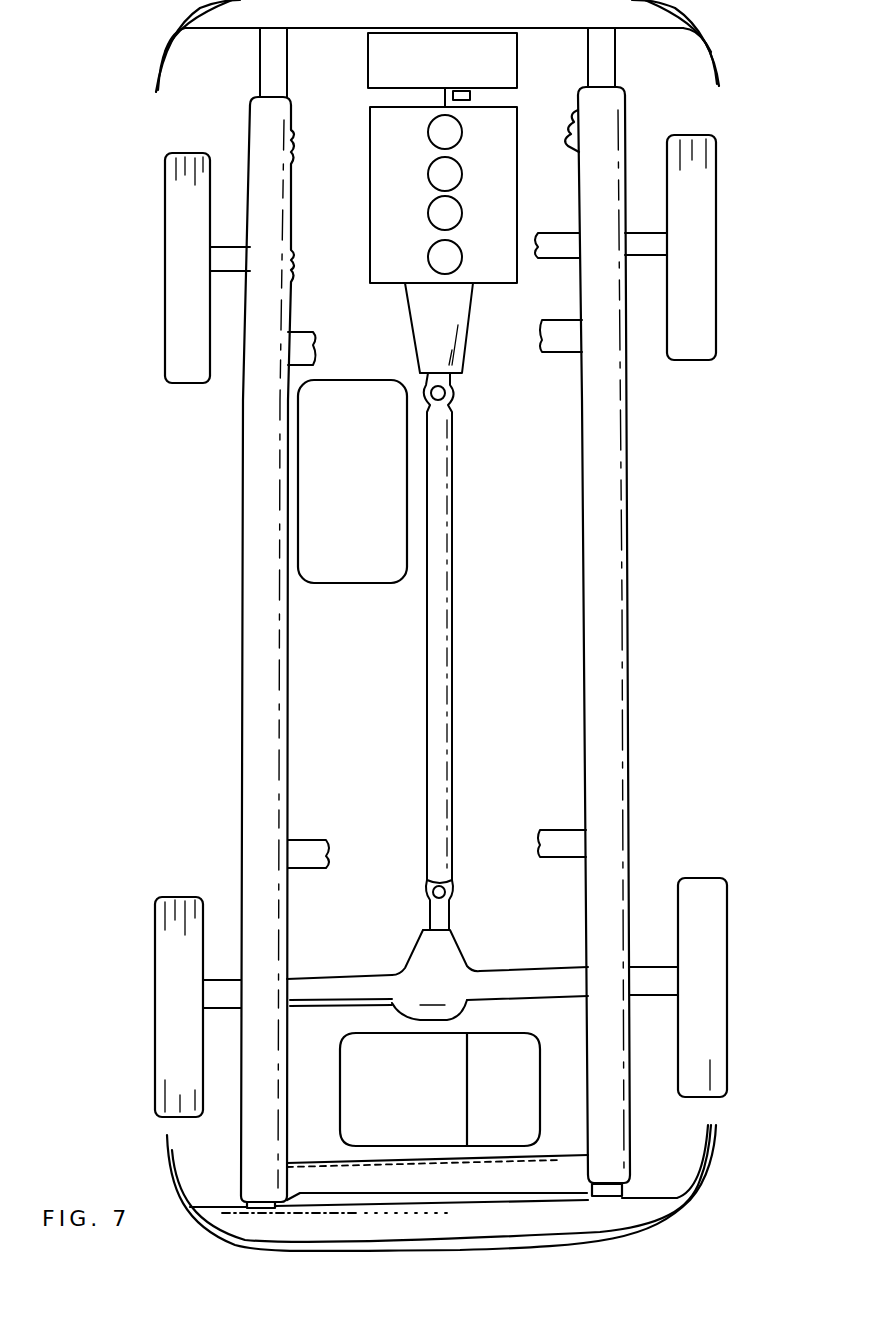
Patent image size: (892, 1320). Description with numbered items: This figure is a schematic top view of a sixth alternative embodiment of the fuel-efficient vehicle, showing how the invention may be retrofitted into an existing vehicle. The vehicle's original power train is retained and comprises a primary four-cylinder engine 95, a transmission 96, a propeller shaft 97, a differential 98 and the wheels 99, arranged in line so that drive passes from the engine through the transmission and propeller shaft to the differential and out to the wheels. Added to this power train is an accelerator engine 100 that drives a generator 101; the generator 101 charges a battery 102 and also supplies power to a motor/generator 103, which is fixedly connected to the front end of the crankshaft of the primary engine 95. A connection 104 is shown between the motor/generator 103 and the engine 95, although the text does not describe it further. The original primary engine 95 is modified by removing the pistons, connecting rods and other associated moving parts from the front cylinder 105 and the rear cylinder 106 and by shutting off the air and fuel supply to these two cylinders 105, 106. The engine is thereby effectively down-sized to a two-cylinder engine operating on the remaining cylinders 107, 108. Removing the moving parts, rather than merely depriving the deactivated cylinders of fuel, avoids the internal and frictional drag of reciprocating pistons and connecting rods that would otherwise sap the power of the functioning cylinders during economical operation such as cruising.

The primary four-cylinder engine 95 is at (370, 190).
The transmission 96 is at (448, 318).
The propeller shaft 97 is at (452, 664).
The differential 98 is at (440, 996).
The wheels 99 is at (155, 950).
The accelerator engine 100 is at (422, 1099).
The generator 101 is at (529, 1101).
The battery 102 is at (370, 496).
The motor/generator 103 is at (462, 71).
The connector 104 is at (470, 96).
The front cylinder 105 is at (428, 129).
The rear cylinder 106 is at (428, 259).
The remaining cylinder 107 is at (462, 174).
The remaining cylinder 108 is at (462, 213).